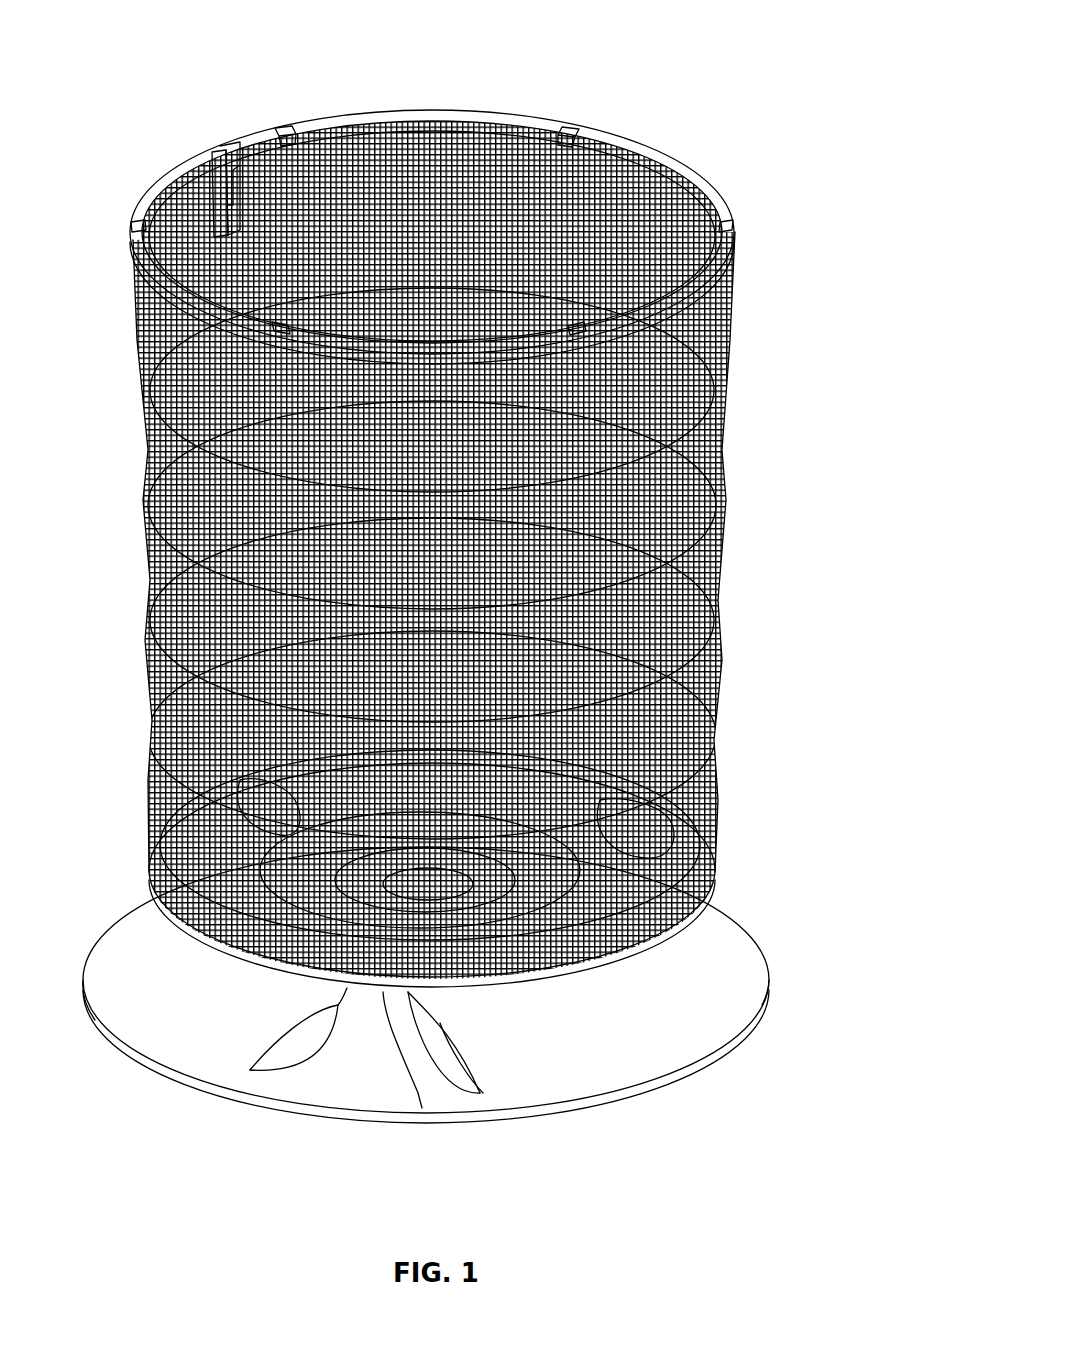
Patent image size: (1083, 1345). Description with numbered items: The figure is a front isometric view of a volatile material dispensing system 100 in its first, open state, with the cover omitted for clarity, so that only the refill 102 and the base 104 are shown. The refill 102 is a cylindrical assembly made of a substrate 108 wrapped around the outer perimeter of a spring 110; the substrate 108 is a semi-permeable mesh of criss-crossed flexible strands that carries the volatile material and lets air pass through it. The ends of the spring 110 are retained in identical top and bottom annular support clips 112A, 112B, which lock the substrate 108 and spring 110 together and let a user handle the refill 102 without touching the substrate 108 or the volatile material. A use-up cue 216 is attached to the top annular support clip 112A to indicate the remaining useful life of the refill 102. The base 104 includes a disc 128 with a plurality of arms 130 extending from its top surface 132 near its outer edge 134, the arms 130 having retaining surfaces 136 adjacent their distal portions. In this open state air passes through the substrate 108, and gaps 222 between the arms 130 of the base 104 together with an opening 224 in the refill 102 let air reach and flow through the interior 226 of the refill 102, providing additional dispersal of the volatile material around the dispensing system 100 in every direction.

The volatile material dispensing system 100 is at (718, 42).
The volatile material dispensing refill 102 is at (495, 550).
The base 104 is at (738, 952).
The substrate 108 is at (705, 530).
The spring 110 is at (586, 226).
The top annular support clip 112A is at (718, 258).
The bottom annular support clip 112B is at (712, 880).
The disc 128 is at (138, 983).
The arms 130 is at (353, 1042).
The top surface 132 is at (512, 1075).
The outer edge 134 is at (750, 1008).
The retaining surfaces 136 is at (421, 1105).
The use-up cue 216 is at (220, 152).
The gaps 222 is at (236, 992).
The opening 224 is at (434, 162).
The interior 226 is at (355, 192).